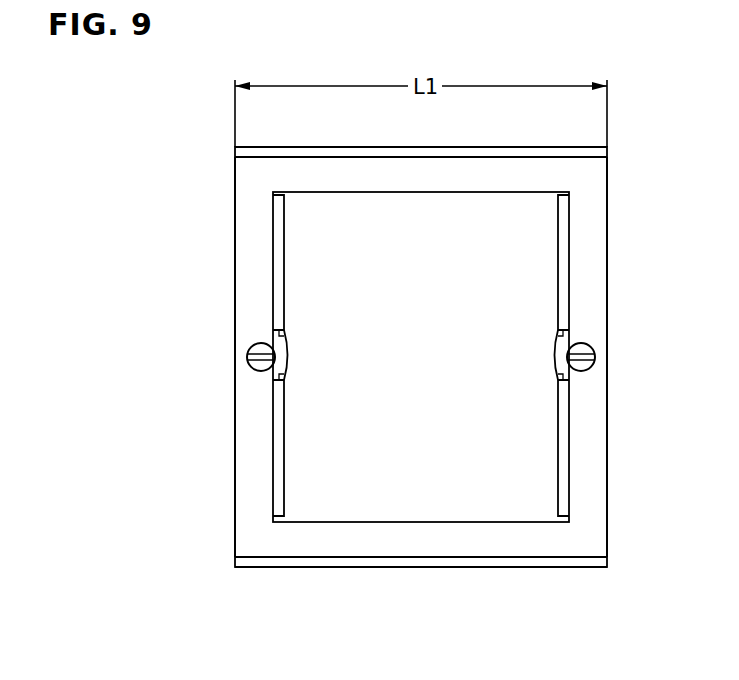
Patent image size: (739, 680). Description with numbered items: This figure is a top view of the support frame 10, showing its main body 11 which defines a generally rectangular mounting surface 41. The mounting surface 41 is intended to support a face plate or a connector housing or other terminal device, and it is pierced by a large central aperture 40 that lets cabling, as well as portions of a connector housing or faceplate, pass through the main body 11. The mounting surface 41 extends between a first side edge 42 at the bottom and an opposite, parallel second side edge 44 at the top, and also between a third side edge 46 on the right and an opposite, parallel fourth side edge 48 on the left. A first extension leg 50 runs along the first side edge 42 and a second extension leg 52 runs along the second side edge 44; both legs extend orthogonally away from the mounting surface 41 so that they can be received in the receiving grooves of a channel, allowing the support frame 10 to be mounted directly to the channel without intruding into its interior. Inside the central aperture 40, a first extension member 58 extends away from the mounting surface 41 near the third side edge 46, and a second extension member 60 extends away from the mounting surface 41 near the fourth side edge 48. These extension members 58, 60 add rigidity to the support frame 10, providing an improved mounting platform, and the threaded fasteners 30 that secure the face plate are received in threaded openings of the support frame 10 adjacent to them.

The support frame 10 is at (245, 228).
The main body 11 is at (607, 148).
The fasteners 30 is at (256, 347).
The central aperture 40 is at (534, 468).
The mounting surface 41 is at (587, 536).
The first side edge 42 is at (373, 563).
The second side edge 44 is at (405, 149).
The third side edge 46 is at (608, 380).
The fourth side edge 48 is at (234, 400).
The first extension leg 50 is at (296, 568).
The second extension leg 52 is at (292, 147).
The first extension member 58 is at (562, 307).
The second extension member 60 is at (278, 312).